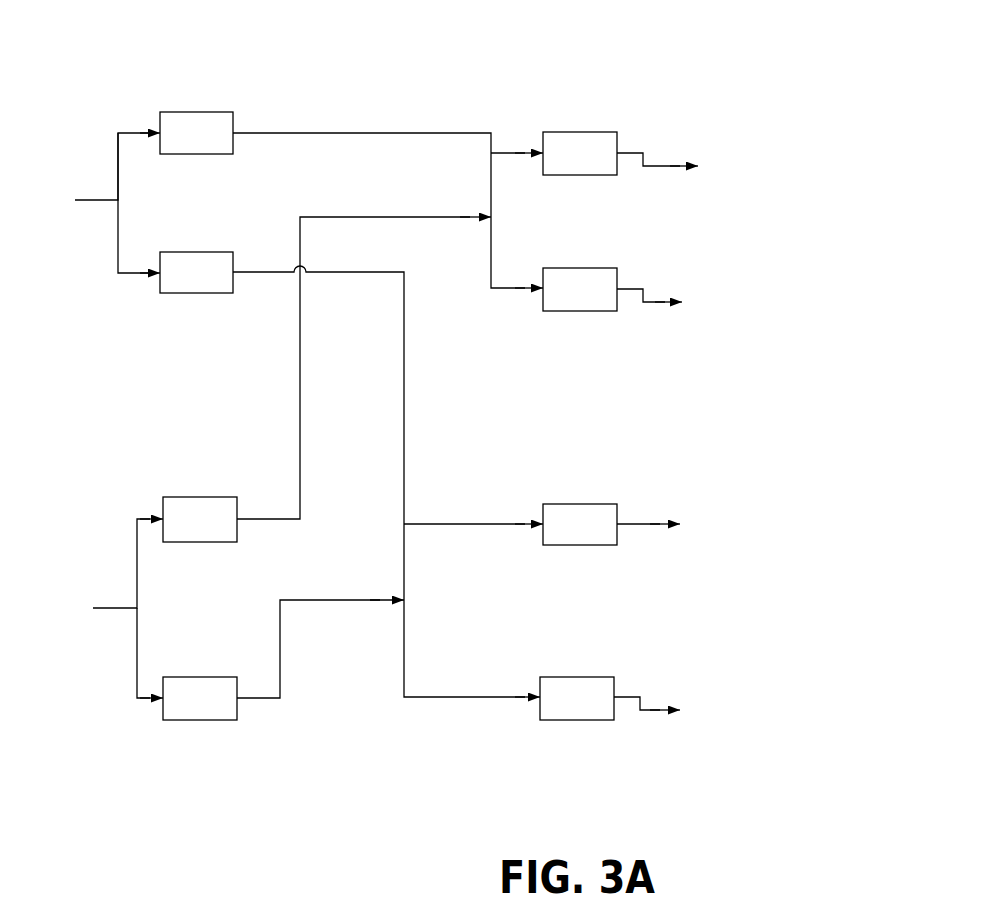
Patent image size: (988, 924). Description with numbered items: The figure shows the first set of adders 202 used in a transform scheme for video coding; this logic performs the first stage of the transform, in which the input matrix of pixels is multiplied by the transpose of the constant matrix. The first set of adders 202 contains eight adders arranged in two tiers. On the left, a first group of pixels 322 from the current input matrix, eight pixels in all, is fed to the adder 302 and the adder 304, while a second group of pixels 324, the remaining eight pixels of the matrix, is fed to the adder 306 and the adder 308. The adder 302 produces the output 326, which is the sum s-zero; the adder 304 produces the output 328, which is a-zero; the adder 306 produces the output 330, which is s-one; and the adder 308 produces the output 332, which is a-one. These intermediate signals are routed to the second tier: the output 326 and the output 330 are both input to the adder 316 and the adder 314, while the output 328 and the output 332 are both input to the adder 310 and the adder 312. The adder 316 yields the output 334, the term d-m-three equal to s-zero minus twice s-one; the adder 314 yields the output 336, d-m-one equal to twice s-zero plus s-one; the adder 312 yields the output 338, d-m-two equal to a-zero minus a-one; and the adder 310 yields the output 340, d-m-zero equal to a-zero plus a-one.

The first set of adders 202 is at (445, 406).
The adder A0 302 is at (190, 112).
The adder A1 304 is at (200, 293).
The adder A2 306 is at (190, 497).
The adder A3 308 is at (190, 677).
The adder A4 310 is at (568, 677).
The adder A5 312 is at (568, 504).
The adder A6 314 is at (578, 311).
The adder A7 316 is at (573, 132).
The first group of input pixel values 322 is at (39, 77).
The second group of input pixel values 324 is at (48, 487).
The output s0 326 is at (282, 97).
The output a0 328 is at (255, 232).
The output s1 330 is at (248, 480).
The output a1 332 is at (267, 735).
The output dm3 334 is at (645, 115).
The output dm1 336 is at (670, 268).
The output dm2 338 is at (645, 472).
The output dm0 340 is at (637, 655).